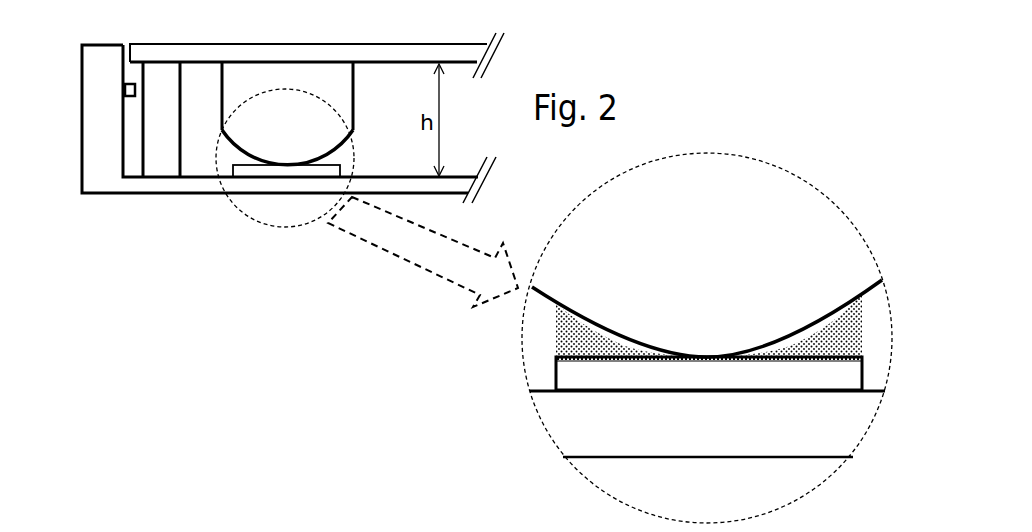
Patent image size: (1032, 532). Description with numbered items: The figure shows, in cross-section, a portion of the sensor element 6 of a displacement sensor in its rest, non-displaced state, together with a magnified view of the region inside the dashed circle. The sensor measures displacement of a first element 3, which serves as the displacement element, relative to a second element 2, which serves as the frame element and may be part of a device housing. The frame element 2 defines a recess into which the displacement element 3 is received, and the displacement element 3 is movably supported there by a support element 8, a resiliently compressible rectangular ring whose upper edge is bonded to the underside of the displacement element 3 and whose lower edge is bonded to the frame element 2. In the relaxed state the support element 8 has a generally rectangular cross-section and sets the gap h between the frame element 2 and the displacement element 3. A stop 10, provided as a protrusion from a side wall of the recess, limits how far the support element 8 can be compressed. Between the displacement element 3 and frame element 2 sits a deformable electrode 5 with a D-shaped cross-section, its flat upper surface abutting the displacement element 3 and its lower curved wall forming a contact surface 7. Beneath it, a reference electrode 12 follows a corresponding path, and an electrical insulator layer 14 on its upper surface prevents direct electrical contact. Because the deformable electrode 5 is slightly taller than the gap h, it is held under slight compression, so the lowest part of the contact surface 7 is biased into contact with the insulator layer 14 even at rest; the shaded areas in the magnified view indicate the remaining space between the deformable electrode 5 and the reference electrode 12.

The second element 2 is at (93, 130).
The first element 3 is at (360, 53).
The deformable electrode 5 is at (416, 145).
The sensor element 6 is at (378, 4).
The contact surface 7 is at (332, 152).
The support element 8 is at (161, 119).
The stop 10 is at (124, 88).
The reference electrode 12 is at (237, 170).
The electrical insulator layer 14 is at (862, 357).